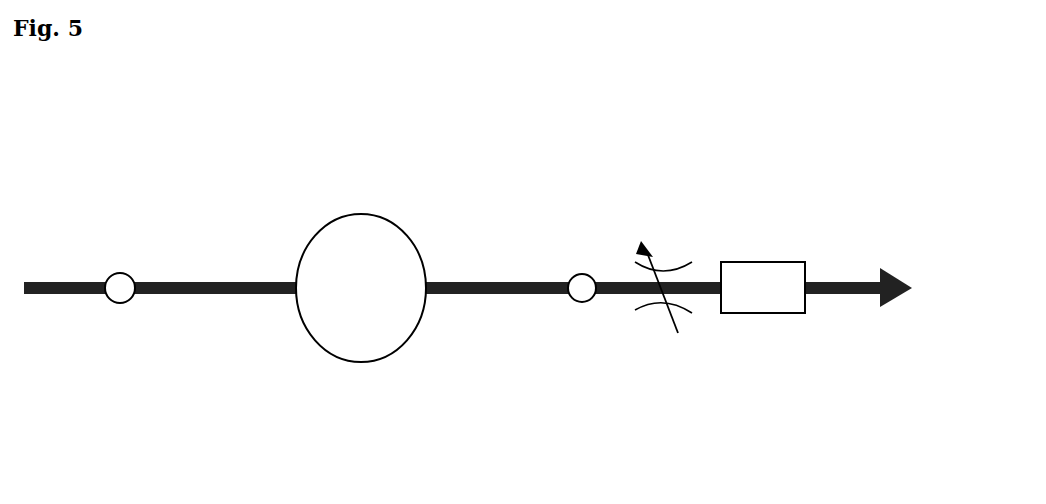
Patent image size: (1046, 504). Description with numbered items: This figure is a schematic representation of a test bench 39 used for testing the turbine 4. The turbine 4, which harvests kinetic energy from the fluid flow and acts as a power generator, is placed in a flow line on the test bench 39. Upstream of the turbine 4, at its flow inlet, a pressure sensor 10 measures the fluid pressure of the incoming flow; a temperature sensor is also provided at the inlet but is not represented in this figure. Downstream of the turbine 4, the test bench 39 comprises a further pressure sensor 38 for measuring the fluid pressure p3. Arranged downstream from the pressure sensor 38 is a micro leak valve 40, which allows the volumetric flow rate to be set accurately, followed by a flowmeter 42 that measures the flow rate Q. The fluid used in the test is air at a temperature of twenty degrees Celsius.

The test bench 39 is at (461, 150).
The turbine 4 is at (287, 408).
The pressure sensor 10 is at (112, 302).
The pressure sensor 38 is at (584, 302).
The micro leak valve 40 is at (662, 327).
The flowmeter 42 is at (780, 313).